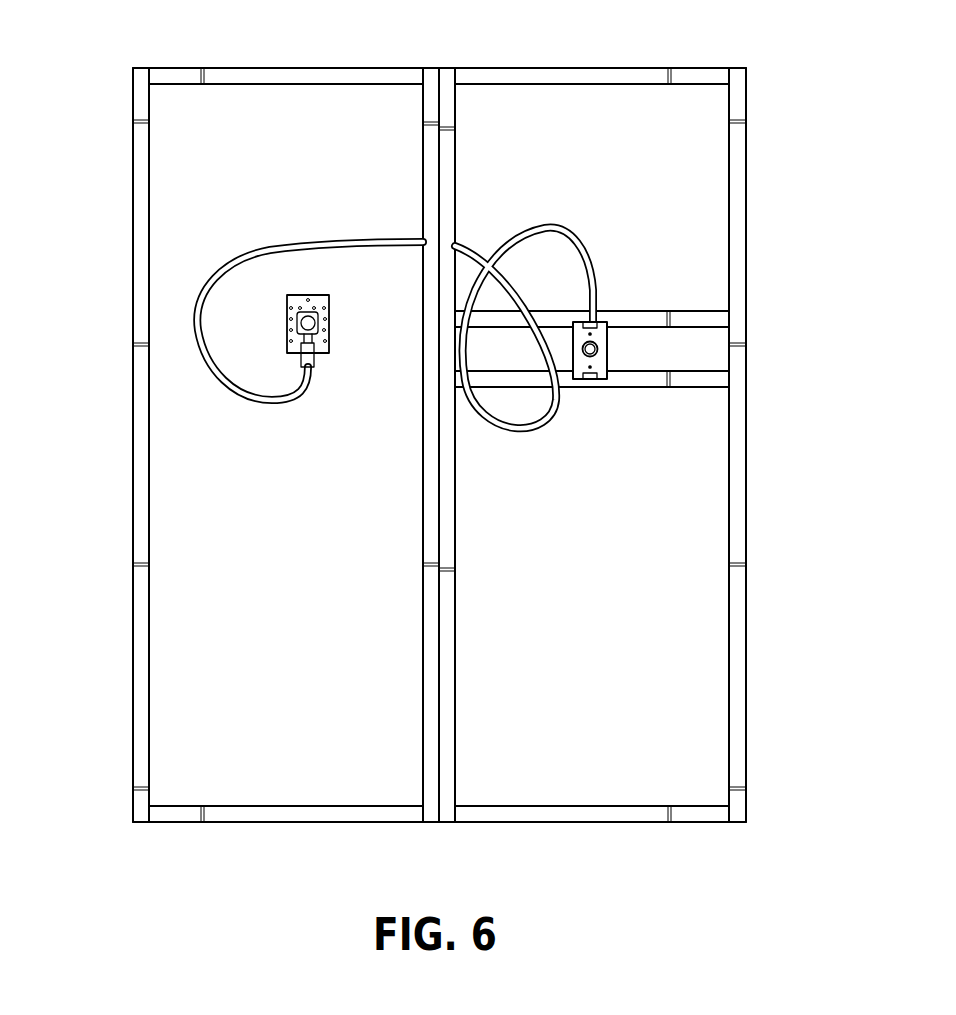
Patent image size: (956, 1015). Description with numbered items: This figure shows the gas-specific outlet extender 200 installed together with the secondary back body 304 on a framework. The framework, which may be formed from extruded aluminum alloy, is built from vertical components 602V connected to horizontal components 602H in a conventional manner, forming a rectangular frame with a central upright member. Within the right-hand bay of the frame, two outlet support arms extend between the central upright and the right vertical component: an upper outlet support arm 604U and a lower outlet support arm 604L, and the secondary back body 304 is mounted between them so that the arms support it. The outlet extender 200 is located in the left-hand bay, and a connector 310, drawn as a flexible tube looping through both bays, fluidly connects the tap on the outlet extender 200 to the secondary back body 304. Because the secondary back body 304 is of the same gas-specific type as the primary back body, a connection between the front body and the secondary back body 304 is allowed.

The horizontal components 602H is at (275, 67).
The vertical components 602V is at (133, 200).
The upper outlet support arm 604U is at (708, 311).
The lower outlet support arm 604L is at (708, 387).
The connector 310 is at (370, 239).
The secondary back body 304 is at (608, 347).
The gas-specific outlet extender 200 is at (330, 311).